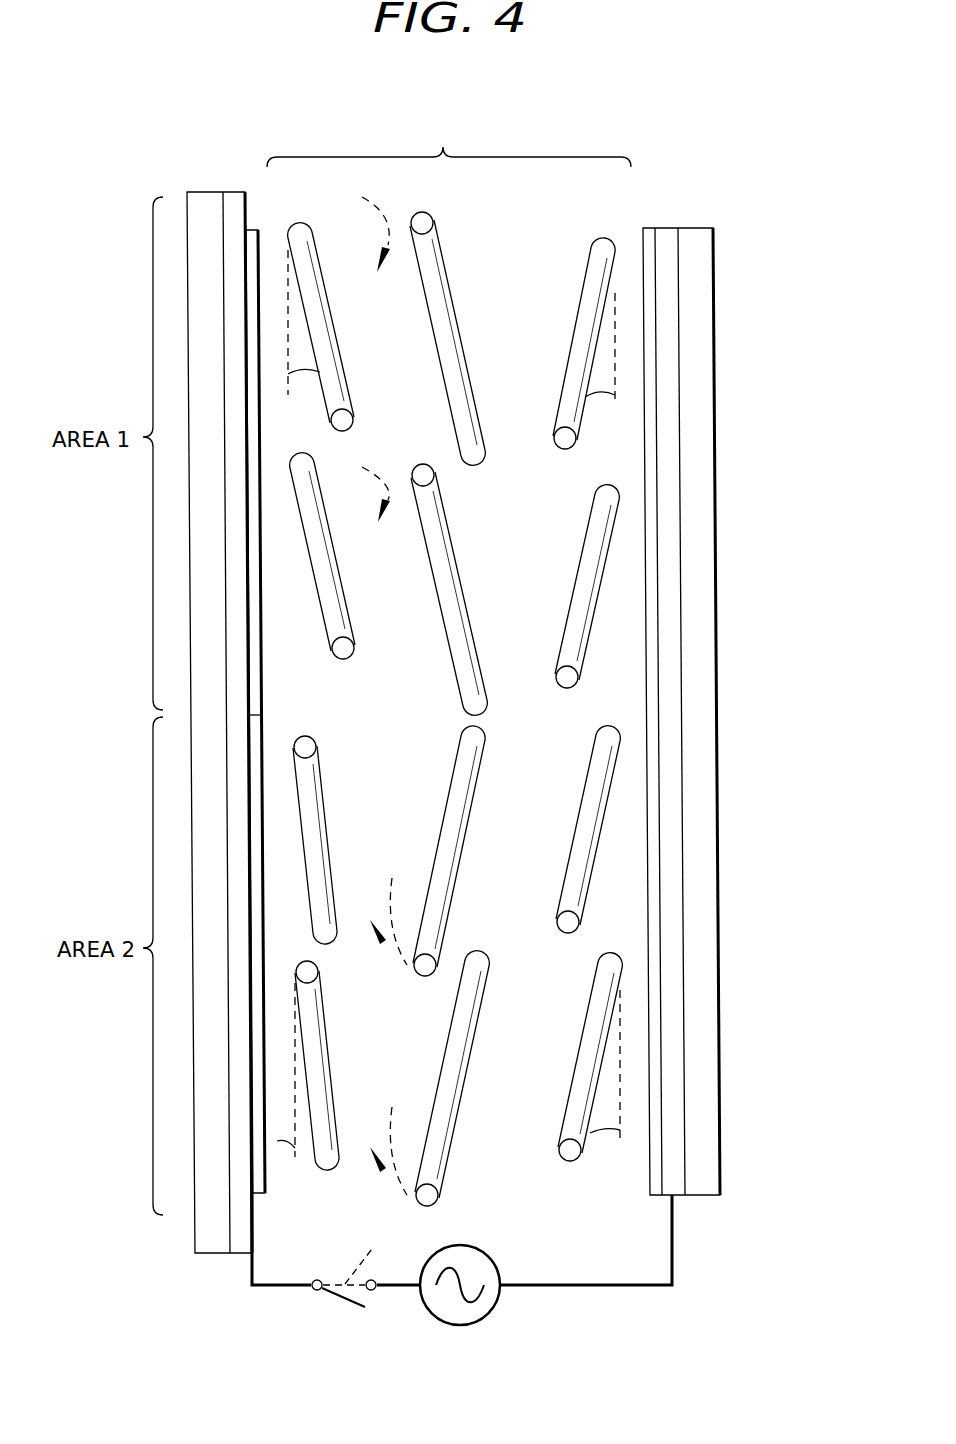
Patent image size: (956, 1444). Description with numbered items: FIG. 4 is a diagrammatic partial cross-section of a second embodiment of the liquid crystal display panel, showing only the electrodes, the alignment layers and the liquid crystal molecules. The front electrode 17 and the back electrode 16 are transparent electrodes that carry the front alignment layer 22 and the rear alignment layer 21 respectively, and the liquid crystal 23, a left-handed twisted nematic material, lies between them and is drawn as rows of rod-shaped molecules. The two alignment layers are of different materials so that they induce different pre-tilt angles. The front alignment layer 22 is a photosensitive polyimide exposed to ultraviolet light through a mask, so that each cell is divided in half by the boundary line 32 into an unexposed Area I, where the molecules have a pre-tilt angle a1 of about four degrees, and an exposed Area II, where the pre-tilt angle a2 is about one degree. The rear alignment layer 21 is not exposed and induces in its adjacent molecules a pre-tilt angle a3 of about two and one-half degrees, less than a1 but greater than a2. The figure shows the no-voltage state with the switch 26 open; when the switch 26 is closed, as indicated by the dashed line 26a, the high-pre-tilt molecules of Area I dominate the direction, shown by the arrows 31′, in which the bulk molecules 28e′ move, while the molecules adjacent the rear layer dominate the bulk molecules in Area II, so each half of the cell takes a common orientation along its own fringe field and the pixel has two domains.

The rear electrode 16 is at (650, 213).
The front electrode 17 is at (183, 173).
The rear alignment layer 21 is at (645, 1195).
The front alignment layer 22 is at (260, 1194).
The rod electrode array 23 is at (449, 140).
The switch 26 is at (340, 1296).
The dashed line 26a is at (370, 1252).
The boundary line 32 is at (258, 712).
The arrows 31′ is at (376, 687).
The bulk liquid crystal molecule 28e′ is at (450, 288).
The pre-tilt angle a1 is at (303, 342).
The pre-tilt angle a2 is at (294, 1089).
The pre-tilt angle a3 is at (602, 739).